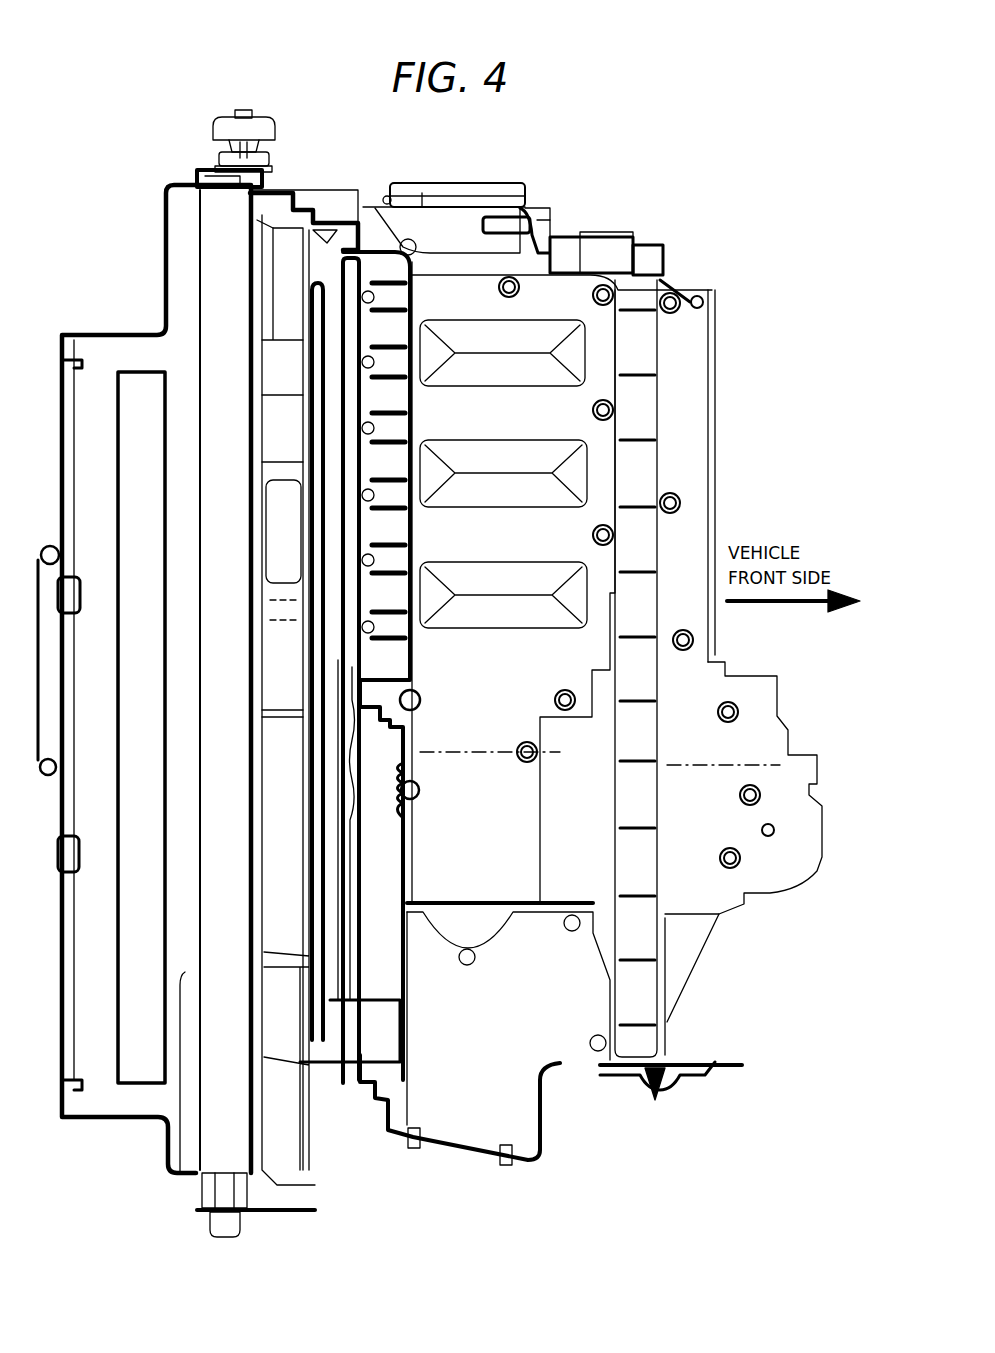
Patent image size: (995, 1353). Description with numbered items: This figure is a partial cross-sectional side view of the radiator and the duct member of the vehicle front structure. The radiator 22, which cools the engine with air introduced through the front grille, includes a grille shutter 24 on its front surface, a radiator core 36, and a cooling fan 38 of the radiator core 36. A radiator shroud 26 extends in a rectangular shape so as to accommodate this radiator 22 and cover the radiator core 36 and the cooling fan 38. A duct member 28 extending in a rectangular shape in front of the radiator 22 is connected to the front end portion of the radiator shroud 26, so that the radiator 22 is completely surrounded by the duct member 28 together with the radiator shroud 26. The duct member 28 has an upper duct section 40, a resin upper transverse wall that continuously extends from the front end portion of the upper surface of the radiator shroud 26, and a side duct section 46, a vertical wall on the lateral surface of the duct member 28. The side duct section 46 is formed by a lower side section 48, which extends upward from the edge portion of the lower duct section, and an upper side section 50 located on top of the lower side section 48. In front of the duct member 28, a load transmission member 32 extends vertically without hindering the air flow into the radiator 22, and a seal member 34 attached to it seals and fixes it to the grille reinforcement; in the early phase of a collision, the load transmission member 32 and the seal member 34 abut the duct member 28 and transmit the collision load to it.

The radiator 22 is at (403, 170).
The grille shutter 24 is at (410, 303).
The radiator shroud 26 is at (163, 185).
The duct member 28 is at (558, 208).
The load transmission member 32 is at (632, 345).
The seal member 34 is at (717, 300).
The radiator core 36 is at (198, 1098).
The cooling fan 38 is at (118, 1048).
The upper duct section 40 is at (433, 207).
The side duct section 46 is at (513, 420).
The lower side section 48 is at (527, 1018).
The upper side section 50 is at (510, 528).